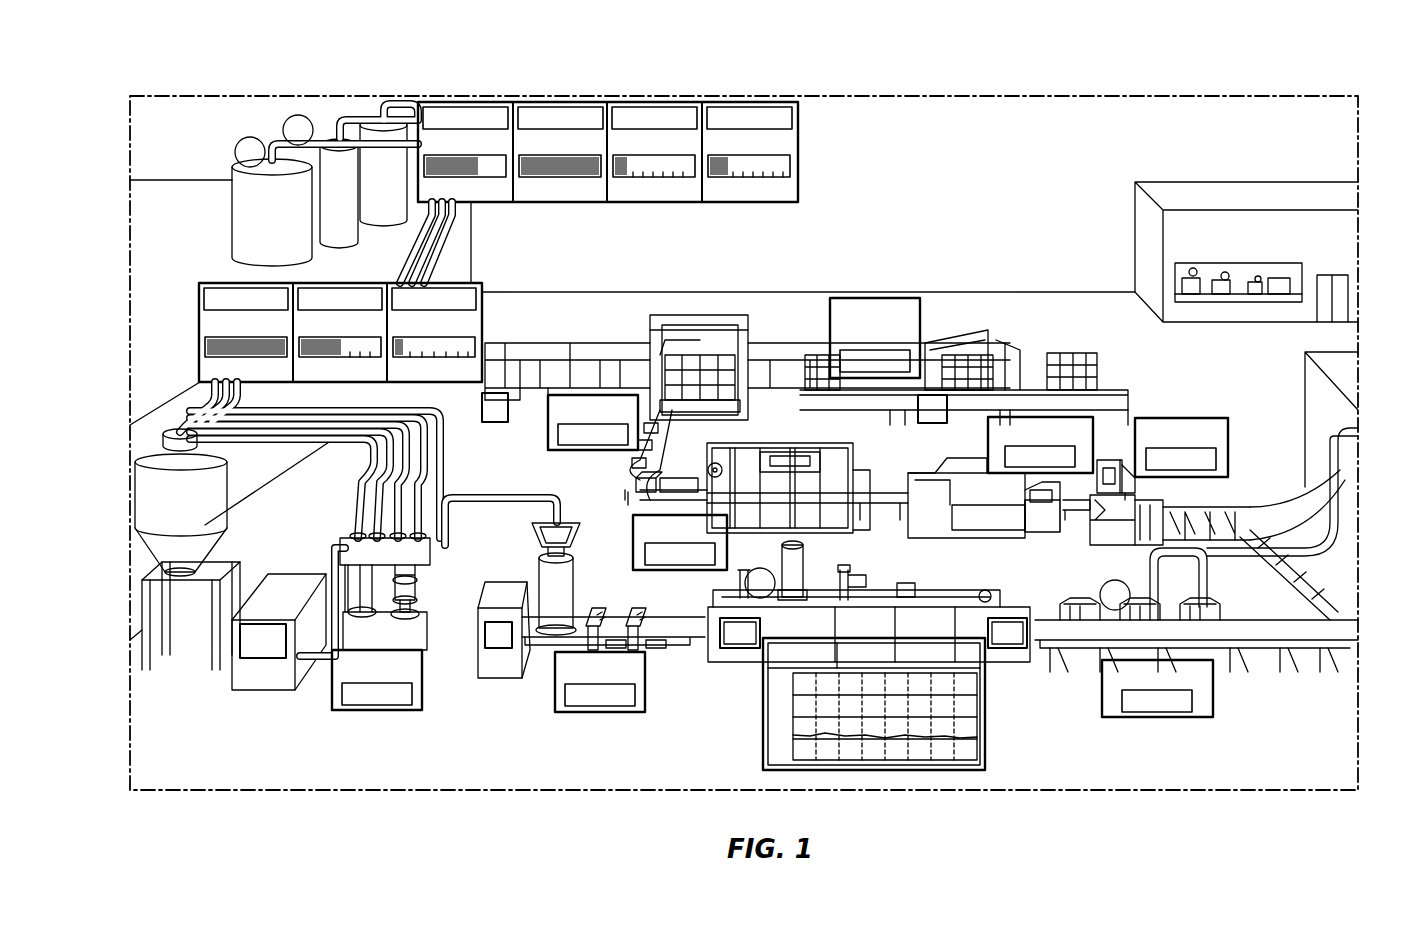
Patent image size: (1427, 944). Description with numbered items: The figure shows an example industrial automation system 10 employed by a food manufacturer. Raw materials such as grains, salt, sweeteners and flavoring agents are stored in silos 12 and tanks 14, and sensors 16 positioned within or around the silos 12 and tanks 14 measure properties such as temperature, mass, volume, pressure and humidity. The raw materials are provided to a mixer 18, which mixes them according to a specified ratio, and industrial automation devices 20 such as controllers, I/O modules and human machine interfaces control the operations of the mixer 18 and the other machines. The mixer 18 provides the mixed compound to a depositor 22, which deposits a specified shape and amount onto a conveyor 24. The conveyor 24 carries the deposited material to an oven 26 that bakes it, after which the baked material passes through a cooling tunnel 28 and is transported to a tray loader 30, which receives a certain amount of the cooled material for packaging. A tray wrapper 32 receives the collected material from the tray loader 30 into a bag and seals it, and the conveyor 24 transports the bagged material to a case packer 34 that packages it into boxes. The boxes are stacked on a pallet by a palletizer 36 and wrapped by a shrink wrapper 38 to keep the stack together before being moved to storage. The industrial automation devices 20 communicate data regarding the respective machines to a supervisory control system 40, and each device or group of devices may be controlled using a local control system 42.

The industrial automation system 10 is at (1286, 50).
The silos 12 is at (342, 122).
The tanks 14 is at (182, 340).
The sensors 16 is at (296, 115).
The mixer 18 is at (426, 669).
The industrial automation devices 20 is at (258, 688).
The depositor 22 is at (657, 652).
The conveyor 24 is at (667, 618).
The oven 26 is at (955, 586).
The cooling tunnel 28 is at (1207, 638).
The tray loader 30 is at (1230, 448).
The tray wrapper 32 is at (982, 437).
The case packer 34 is at (628, 540).
The palletizer 36 is at (545, 422).
The shrink wrapper 38 is at (928, 316).
The supervisory control system 40 is at (1250, 277).
The local control system 42 is at (250, 662).